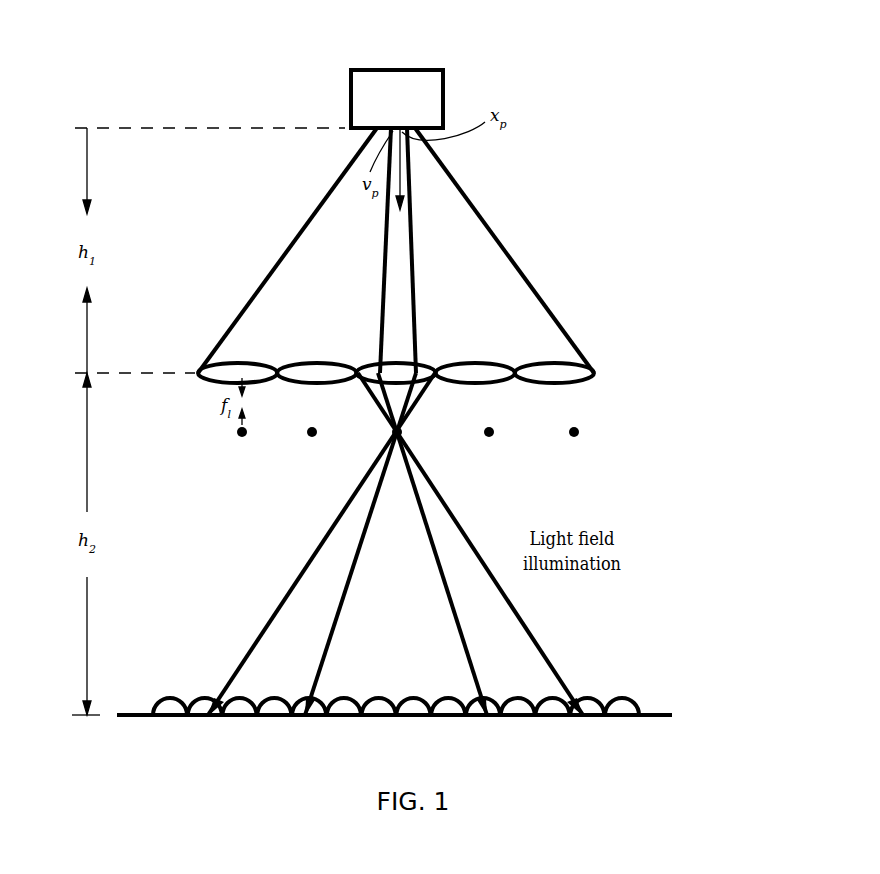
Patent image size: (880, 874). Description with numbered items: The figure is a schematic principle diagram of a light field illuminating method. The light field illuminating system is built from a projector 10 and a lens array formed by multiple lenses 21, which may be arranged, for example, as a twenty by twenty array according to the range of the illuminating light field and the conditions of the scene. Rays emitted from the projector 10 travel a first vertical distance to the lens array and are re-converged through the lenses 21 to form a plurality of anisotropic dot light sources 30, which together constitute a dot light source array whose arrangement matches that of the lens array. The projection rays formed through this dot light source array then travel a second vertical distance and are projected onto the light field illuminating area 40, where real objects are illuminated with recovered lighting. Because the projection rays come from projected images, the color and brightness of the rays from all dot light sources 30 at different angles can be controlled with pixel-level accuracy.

The projector 10 is at (416, 69).
The lenses 21 is at (538, 362).
The anisotropic dot light sources 30 is at (489, 437).
The light field illuminating area 40 is at (142, 717).